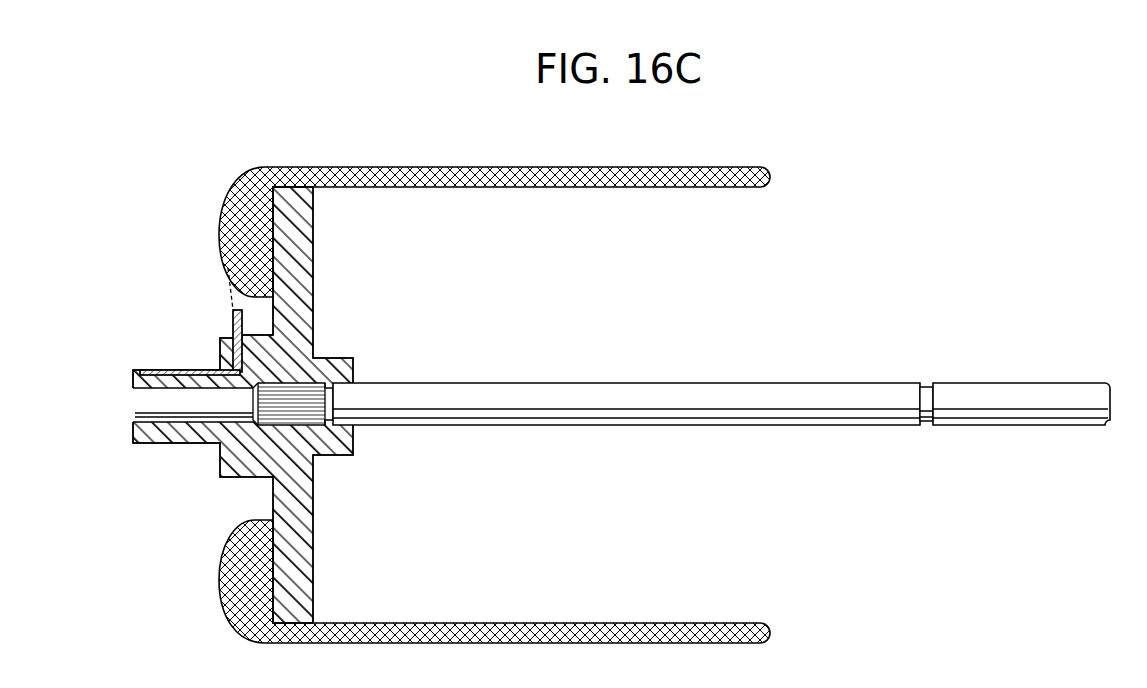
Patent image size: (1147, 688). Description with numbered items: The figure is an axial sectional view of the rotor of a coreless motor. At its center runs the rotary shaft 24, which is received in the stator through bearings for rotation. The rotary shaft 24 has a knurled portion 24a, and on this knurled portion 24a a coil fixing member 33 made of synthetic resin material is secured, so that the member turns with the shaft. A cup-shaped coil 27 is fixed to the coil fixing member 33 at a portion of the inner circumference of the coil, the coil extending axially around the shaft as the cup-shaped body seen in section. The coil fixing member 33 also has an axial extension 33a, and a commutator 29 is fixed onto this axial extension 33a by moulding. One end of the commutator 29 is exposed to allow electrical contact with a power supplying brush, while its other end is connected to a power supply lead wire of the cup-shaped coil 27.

The rotary shaft 24 is at (803, 388).
The knurled portion 24a is at (334, 398).
The cup-shaped coil 27 is at (574, 187).
The commutator 29 is at (232, 327).
The coil fixing member 33 is at (302, 300).
The axial extension 33a is at (152, 386).